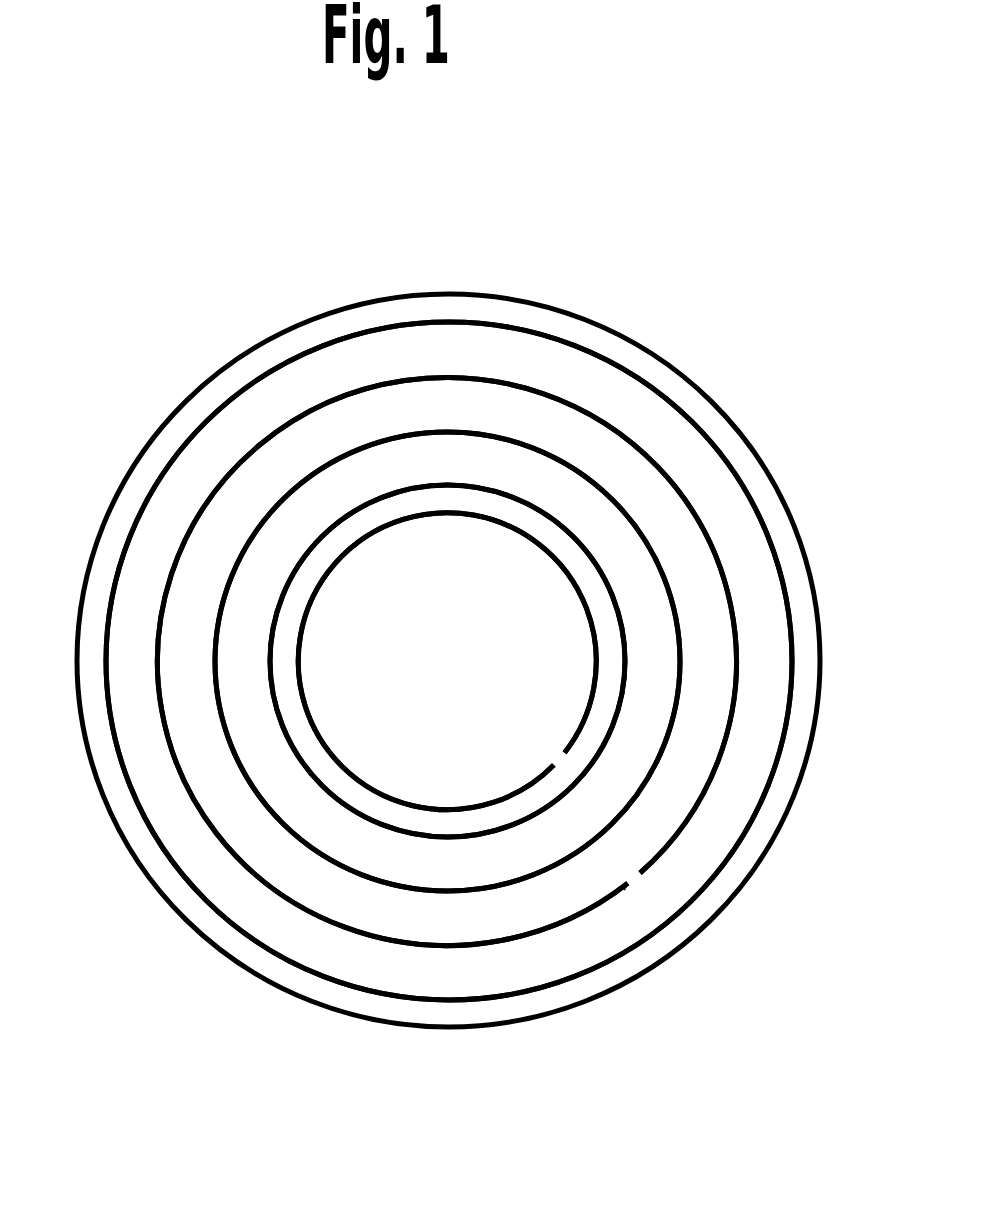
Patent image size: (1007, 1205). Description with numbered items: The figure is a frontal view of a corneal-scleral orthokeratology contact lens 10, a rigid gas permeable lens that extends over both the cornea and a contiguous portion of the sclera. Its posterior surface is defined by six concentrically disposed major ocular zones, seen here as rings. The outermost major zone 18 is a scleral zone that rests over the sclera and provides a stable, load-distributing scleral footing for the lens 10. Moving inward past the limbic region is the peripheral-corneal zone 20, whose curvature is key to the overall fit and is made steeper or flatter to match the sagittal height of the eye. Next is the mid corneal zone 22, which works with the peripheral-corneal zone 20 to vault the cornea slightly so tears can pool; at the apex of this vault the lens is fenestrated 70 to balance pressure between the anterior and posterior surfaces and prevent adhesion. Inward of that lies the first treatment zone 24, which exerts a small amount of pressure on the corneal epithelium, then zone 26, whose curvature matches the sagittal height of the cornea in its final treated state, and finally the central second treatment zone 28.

The corneal-scleral orthokeratology contact lens 10 is at (458, 282).
The outermost major zone 18 is at (782, 549).
The peripheral-corneal zone 20 is at (715, 497).
The mid corneal zone 22 is at (657, 512).
The first treatment zone 24 is at (603, 530).
The treatment zone sagittal adjustment curve 26 is at (550, 533).
The second treatment zone 28 is at (452, 653).
The fenestration 70 is at (558, 772).